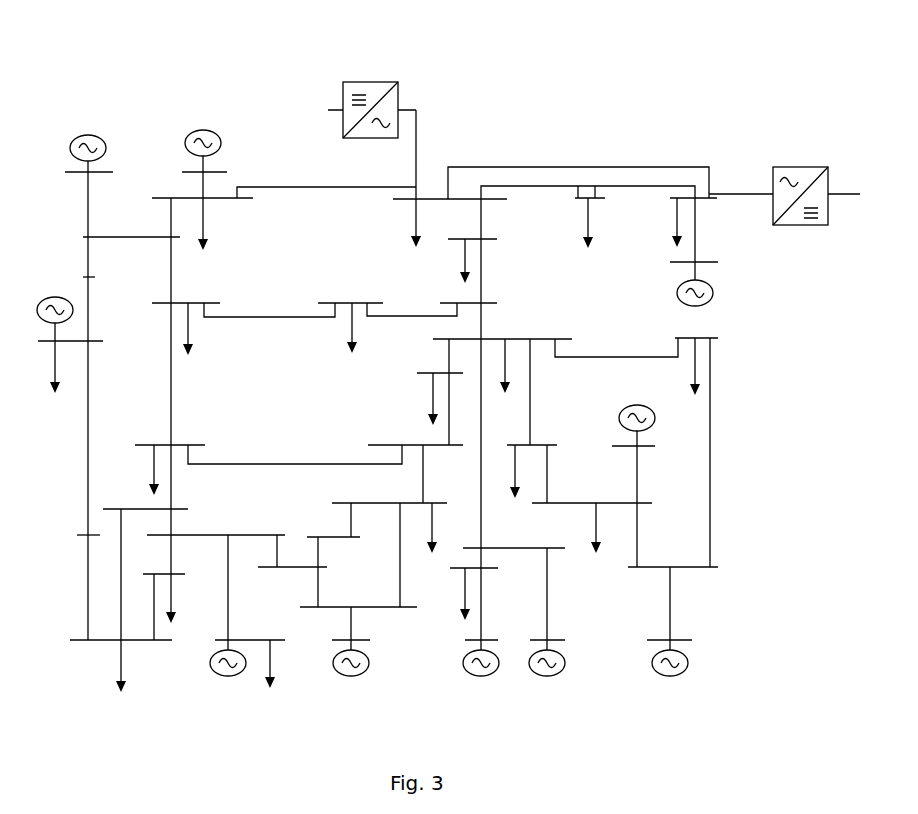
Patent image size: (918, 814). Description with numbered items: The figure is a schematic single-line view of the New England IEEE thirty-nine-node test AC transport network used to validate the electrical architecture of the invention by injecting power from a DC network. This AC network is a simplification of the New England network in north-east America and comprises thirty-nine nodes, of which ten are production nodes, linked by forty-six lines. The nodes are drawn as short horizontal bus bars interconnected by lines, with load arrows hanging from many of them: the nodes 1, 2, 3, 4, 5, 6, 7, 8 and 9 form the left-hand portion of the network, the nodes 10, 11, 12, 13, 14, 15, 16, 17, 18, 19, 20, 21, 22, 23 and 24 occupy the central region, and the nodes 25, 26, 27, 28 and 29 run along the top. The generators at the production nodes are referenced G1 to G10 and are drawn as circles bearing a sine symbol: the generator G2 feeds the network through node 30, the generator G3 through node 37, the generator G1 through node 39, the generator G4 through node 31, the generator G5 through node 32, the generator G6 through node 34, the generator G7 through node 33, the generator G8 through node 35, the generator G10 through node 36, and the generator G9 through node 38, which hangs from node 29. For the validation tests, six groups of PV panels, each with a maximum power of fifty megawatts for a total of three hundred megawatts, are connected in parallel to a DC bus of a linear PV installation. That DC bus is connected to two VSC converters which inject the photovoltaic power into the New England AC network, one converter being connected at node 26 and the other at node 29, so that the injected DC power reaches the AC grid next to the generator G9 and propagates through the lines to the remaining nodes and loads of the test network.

The node 1 is at (81, 277).
The node 2 is at (123, 237).
The node 3 is at (194, 323).
The node 4 is at (178, 464).
The node 5 is at (154, 509).
The node 6 is at (217, 522).
The node 7 is at (172, 574).
The node 8 is at (112, 640).
The node 9 is at (80, 535).
The node 10 is at (373, 607).
The node 11 is at (307, 567).
The node 12 is at (348, 537).
The node 13 is at (379, 522).
The node 14 is at (404, 445).
The node 15 is at (428, 393).
The node 16 is at (516, 360).
The node 17 is at (483, 303).
The node 18 is at (365, 322).
The node 19 is at (514, 536).
The node 20 is at (488, 588).
The node 21 is at (683, 360).
The node 22 is at (659, 567).
The node 23 is at (606, 522).
The node 24 is at (546, 465).
The node 25 is at (216, 198).
The node 26 is at (437, 217).
The node 27 is at (486, 255).
The node 28 is at (577, 217).
The node 29 is at (681, 216).
The node 30 is at (103, 172).
The node 31 is at (264, 658).
The node 32 is at (365, 640).
The node 33 is at (562, 640).
The node 34 is at (496, 640).
The node 35 is at (684, 640).
The node 36 is at (647, 446).
The node 37 is at (218, 203).
The node 38 is at (680, 262).
The node 39 is at (85, 358).
The generator G1 is at (55, 297).
The generator G2 is at (88, 135).
The generator G3 is at (203, 130).
The generator G4 is at (228, 676).
The generator G5 is at (351, 676).
The generator G6 is at (481, 676).
The generator G7 is at (547, 676).
The generator G8 is at (670, 676).
The generator G9 is at (713, 293).
The generator G10 is at (619, 416).